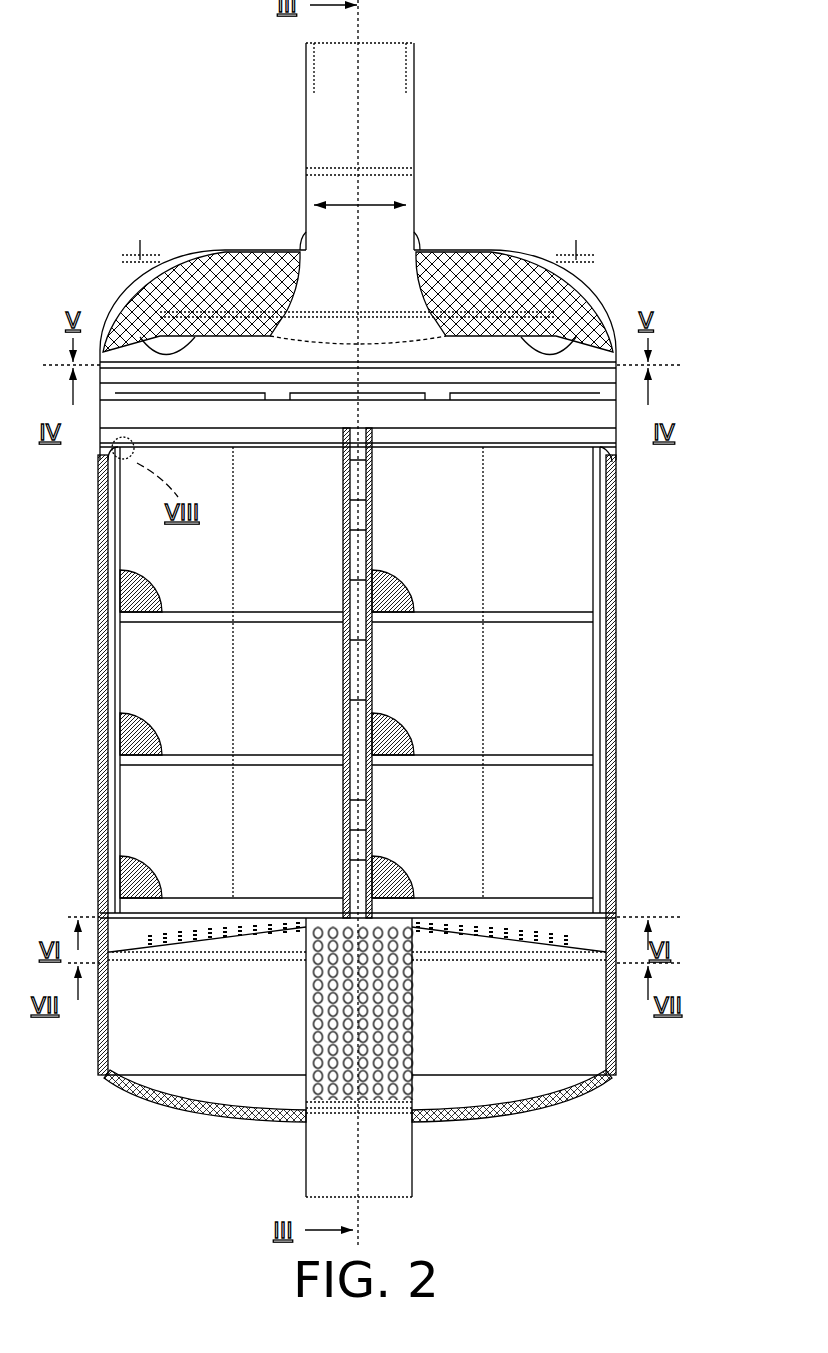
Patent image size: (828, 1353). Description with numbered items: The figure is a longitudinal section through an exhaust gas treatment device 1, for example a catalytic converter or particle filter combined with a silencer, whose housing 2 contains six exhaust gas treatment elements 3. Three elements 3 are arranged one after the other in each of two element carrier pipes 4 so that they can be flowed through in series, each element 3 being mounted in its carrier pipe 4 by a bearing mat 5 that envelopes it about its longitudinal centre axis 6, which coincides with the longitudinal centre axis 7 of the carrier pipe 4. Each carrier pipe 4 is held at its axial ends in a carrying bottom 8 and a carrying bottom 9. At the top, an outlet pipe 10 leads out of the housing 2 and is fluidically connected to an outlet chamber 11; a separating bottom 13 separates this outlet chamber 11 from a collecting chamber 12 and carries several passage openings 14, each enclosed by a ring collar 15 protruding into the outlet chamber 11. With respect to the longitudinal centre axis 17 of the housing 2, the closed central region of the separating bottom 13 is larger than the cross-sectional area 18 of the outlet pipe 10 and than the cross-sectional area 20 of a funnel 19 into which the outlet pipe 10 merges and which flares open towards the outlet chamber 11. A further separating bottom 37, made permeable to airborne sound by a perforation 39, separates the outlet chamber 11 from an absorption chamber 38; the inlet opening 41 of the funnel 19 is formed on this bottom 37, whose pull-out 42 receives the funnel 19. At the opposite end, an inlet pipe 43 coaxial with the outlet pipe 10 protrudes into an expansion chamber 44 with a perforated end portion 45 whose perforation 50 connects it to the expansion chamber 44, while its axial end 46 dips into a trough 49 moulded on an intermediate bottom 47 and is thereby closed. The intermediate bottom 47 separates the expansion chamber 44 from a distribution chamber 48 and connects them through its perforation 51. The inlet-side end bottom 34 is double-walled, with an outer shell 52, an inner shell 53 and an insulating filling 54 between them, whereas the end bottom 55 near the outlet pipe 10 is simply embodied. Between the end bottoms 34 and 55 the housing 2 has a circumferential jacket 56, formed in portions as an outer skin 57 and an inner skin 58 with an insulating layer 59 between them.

The exhaust gas treatment device 1 is at (617, 93).
The housing 2 is at (539, 262).
The exhaust gas treatment element 3 is at (356, 672).
The element carrier pipe 4 is at (113, 543).
The bearing mat 5 is at (120, 523).
The longitudinal centre axis 6 is at (404, 672).
The longitudinal centre axis 7 is at (233, 535).
The carrying bottom 8 is at (611, 908).
The carrying bottom 9 is at (619, 465).
The outlet pipe 10 is at (327, 145).
The outlet chamber 11 is at (355, 345).
The collecting chamber 12 is at (358, 409).
The separating bottom 13 is at (398, 405).
The passage opening 14 is at (247, 397).
The ring collar 15 is at (489, 250).
The longitudinal centre axis 17 is at (365, 123).
The cross-sectional area 18 is at (383, 205).
The funnel 19 is at (258, 256).
The cross-sectional area 20 is at (305, 255).
The end bottom 34 is at (197, 1124).
The separating bottom 37 is at (443, 337).
The absorption chamber 38 is at (557, 302).
The perforation 39 is at (152, 340).
The inlet opening 41 is at (432, 335).
The pull-out 42 is at (413, 313).
The inlet pipe 43 is at (322, 1163).
The expansion chamber 44 is at (357, 1035).
The perforated end portion 45 is at (302, 1100).
The axial end 46 is at (405, 918).
The intermediate bottom 47 is at (558, 938).
The distribution chamber 48 is at (593, 889).
The trough 49 is at (323, 920).
The perforation 50 is at (382, 990).
The perforation 51 is at (202, 942).
The outer shell 52 is at (528, 1113).
The inner shell 53 is at (488, 1115).
The insulating filling 54 is at (158, 1107).
The end bottom 55 is at (225, 250).
The jacket 56 is at (97, 636).
The outer skin 57 is at (619, 825).
The inner skin 58 is at (607, 672).
The insulating layer 59 is at (615, 733).